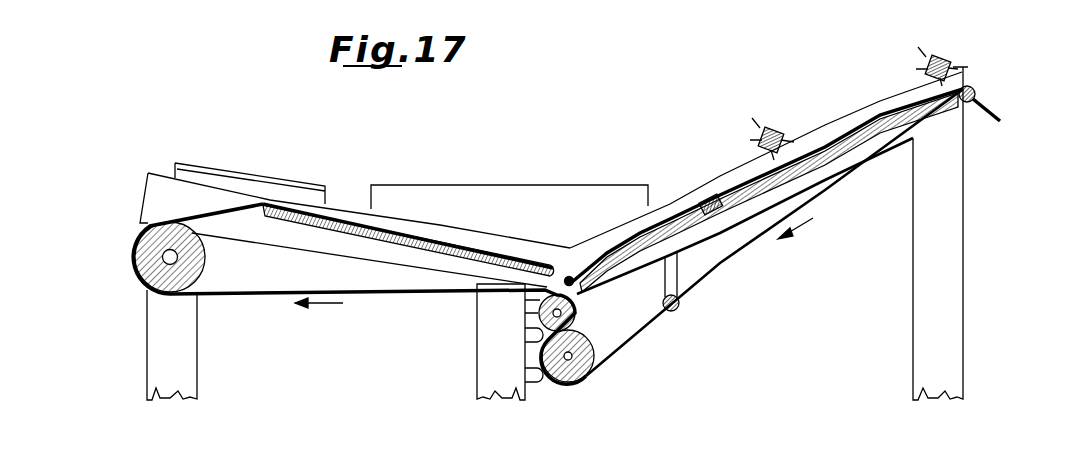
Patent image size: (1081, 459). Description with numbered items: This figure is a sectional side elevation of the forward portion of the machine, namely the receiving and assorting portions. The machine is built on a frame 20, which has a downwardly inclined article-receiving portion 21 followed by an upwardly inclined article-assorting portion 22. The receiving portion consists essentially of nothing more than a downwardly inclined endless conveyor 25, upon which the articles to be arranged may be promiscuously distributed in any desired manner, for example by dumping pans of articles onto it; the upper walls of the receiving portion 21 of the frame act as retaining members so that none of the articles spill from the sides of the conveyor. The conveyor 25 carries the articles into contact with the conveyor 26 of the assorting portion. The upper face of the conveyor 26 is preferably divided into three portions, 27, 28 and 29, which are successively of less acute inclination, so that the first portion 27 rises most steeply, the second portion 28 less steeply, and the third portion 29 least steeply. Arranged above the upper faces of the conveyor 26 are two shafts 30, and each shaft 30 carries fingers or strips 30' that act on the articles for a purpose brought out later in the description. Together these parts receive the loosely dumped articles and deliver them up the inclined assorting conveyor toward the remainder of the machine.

The frame 20 is at (492, 368).
The article-receiving portion 21 is at (336, 212).
The article-assorting portion 22 is at (843, 122).
The endless conveyor 25 is at (413, 238).
The conveyor 26 is at (750, 248).
The portion of conveyor upper face 27 is at (690, 200).
The portion of conveyor upper face 28 is at (873, 128).
The portion of conveyor upper face 29 is at (975, 94).
The shaft 30 is at (869, 91).
The fingers or strips 30' is at (815, 78).